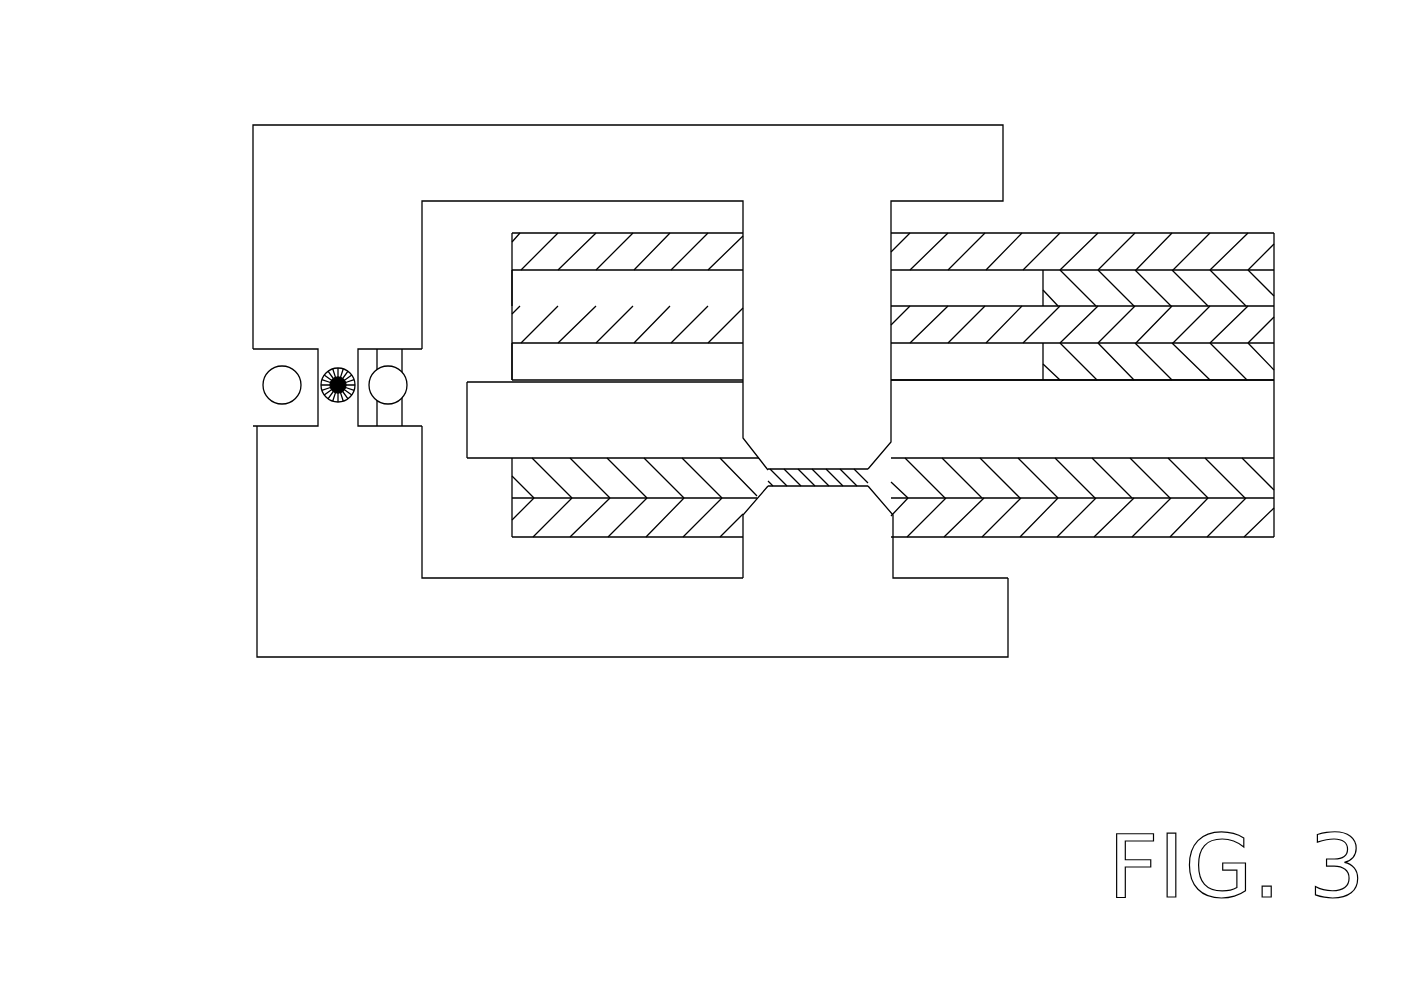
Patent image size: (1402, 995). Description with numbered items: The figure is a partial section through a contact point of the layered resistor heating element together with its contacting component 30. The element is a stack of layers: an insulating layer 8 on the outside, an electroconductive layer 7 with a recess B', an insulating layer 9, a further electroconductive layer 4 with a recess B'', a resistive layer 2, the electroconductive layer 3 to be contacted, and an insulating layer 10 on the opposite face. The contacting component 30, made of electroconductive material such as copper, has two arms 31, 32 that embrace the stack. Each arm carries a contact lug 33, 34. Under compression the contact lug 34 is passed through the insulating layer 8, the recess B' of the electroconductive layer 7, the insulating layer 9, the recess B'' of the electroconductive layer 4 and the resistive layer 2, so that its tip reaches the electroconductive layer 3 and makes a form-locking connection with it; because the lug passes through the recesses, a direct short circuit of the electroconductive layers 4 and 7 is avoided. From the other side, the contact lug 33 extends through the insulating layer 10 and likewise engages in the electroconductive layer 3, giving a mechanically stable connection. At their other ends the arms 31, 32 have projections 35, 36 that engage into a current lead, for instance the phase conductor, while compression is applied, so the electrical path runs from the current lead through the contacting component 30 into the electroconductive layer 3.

The resistive layer 2 is at (1233, 430).
The electroconductive layer 3 is at (1242, 483).
The electroconductive layer 4 is at (1247, 363).
The electroconductive layer 7 is at (1250, 292).
The insulating layer 8 is at (1167, 245).
The insulating layer 9 is at (1250, 326).
The insulating layer 10 is at (1252, 525).
The contacting component 30 is at (490, 668).
The arm 31 is at (588, 632).
The arm 32 is at (580, 145).
The contact lug 33 is at (875, 557).
The contact lug 34 is at (878, 213).
The projection 35 is at (340, 415).
The projection 36 is at (340, 352).
The recess B' is at (480, 294).
The recess B'' is at (583, 360).